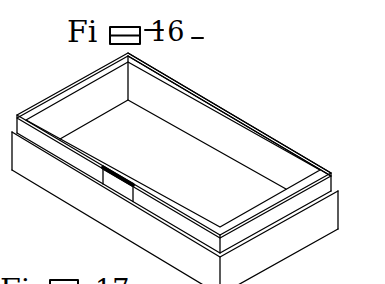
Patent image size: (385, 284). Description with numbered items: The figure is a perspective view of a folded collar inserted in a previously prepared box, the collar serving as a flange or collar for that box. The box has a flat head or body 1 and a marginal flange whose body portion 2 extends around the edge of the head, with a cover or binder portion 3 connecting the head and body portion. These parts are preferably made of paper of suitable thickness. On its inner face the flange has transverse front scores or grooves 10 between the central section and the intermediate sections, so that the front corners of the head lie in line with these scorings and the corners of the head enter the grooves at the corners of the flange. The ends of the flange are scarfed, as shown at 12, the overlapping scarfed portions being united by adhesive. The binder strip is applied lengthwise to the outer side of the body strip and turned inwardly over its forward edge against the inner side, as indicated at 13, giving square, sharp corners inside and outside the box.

The head 1 is at (173, 144).
The body portion 2 is at (133, 201).
The cover or binder portion 3 is at (55, 106).
The front scores 10 is at (131, 100).
The scarfed ends 12 is at (127, 179).
The inwardly turned forward edge of binder 13 is at (245, 124).